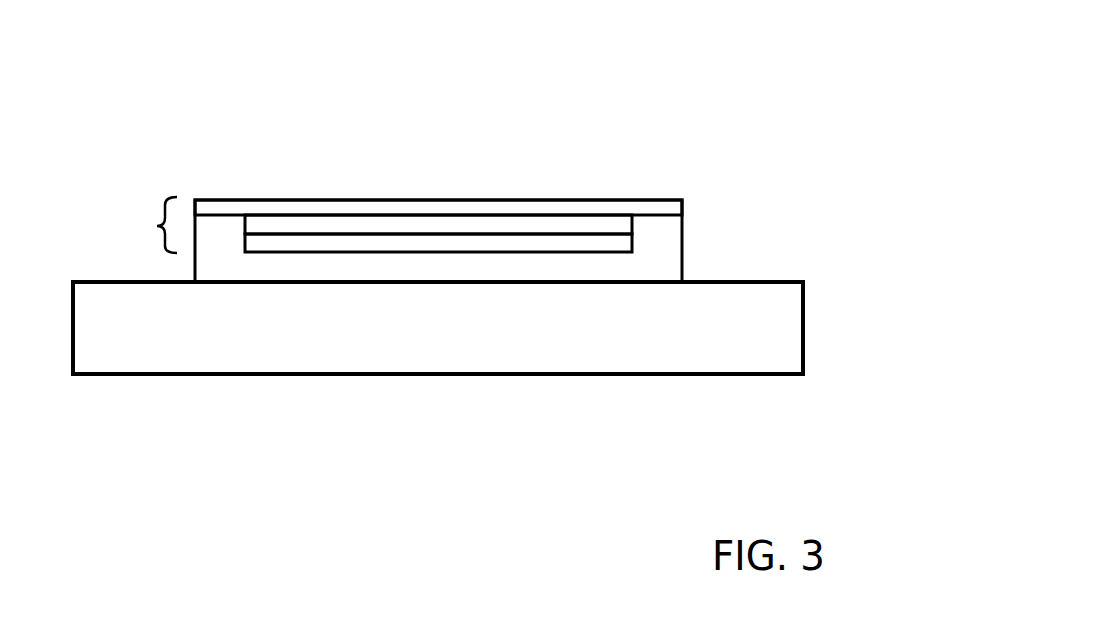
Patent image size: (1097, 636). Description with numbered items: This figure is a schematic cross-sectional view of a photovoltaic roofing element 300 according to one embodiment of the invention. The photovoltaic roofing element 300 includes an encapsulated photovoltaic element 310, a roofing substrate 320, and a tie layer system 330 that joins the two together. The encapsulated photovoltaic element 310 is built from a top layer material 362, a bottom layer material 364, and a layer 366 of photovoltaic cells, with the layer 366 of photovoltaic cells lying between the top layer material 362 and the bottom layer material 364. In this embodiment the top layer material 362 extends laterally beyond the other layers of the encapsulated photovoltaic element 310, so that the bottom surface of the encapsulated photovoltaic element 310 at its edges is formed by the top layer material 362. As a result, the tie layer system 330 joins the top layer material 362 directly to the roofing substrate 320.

The photovoltaic roofing element 300 is at (672, 73).
The encapsulated photovoltaic element 310 is at (157, 226).
The roofing substrate 320 is at (723, 350).
The tie layer system 330 is at (653, 258).
The top layer material 362 is at (675, 199).
The bottom layer material 364 is at (622, 242).
The layer of photovoltaic cells 366 is at (622, 223).